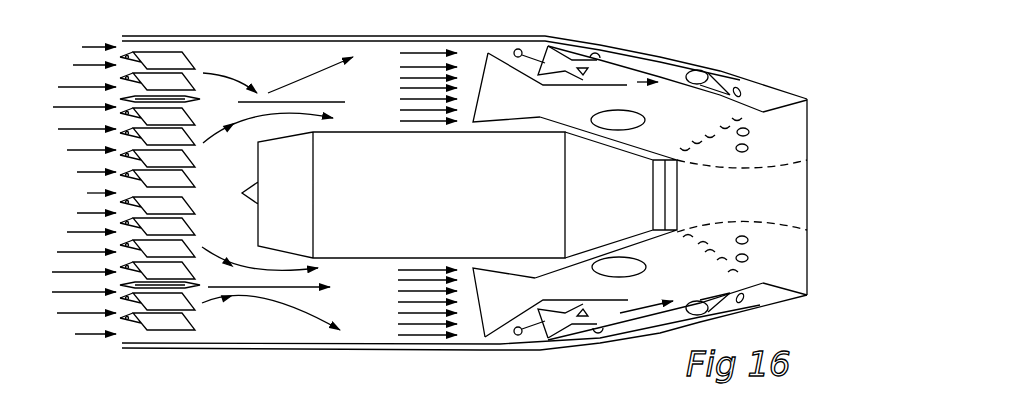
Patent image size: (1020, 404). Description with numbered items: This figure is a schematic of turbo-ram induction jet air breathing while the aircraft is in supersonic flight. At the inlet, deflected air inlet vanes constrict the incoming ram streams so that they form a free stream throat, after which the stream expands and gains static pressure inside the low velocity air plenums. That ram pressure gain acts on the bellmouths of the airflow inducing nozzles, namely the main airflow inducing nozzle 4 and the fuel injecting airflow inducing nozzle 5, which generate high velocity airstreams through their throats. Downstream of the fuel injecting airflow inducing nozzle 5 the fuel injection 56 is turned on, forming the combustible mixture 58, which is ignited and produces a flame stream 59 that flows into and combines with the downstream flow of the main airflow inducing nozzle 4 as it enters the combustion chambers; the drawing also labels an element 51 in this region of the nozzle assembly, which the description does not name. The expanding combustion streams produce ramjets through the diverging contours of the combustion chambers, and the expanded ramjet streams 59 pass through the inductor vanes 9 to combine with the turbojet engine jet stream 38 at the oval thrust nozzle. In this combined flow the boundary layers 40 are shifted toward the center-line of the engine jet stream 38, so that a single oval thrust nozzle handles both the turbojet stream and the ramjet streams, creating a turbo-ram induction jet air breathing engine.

The main airflow inducing nozzle 4 is at (485, 55).
The fuel injecting airflow inducing nozzle 5 is at (543, 47).
The fuel injection 56 is at (582, 63).
The actuator 51 is at (605, 67).
The combustible mixture 58 is at (632, 85).
The inductor vanes 9 is at (736, 118).
The flame stream 59 is at (700, 119).
The boundary layers 40 is at (807, 160).
The engine jet stream 38 is at (835, 192).